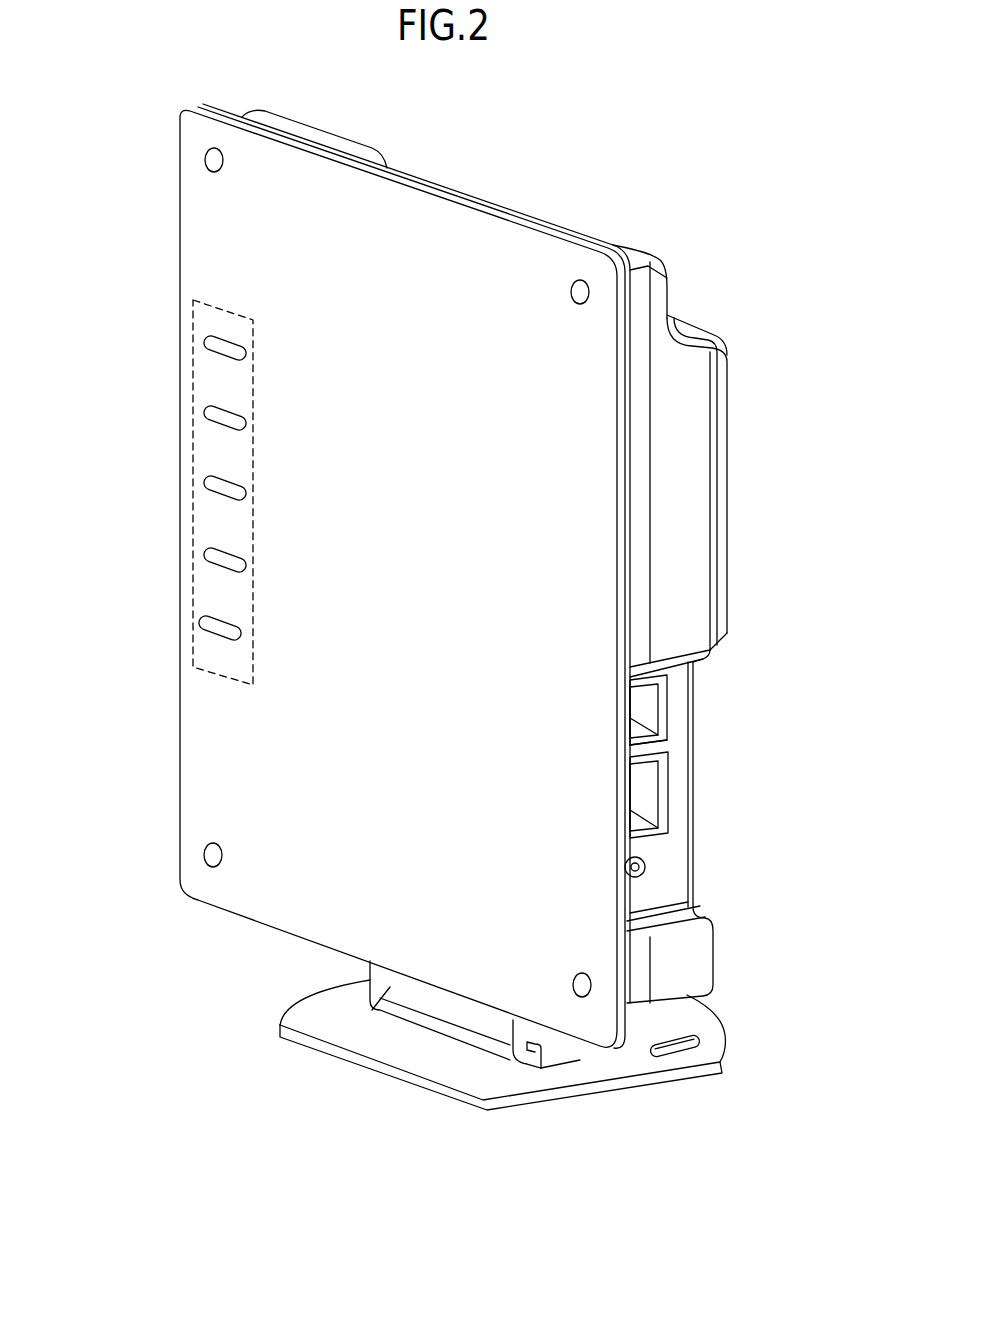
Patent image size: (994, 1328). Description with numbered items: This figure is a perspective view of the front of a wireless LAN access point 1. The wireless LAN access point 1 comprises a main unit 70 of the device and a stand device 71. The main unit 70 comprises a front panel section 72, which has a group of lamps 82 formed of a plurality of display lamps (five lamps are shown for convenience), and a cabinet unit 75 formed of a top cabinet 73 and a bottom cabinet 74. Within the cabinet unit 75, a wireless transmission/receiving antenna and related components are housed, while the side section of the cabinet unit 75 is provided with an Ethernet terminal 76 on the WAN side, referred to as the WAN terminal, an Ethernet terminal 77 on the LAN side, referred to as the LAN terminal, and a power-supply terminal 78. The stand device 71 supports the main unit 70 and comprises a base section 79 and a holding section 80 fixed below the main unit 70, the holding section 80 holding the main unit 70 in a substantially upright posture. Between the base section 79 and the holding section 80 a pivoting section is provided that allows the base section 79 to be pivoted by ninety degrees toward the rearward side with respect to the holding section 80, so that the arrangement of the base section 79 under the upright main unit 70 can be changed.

The wireless LAN access point 1 is at (560, 185).
The main unit 70 is at (214, 241).
The stand device 71 is at (408, 1060).
The front panel section 72 is at (240, 740).
The top cabinet 73 is at (637, 423).
The bottom cabinet 74 is at (680, 477).
The cabinet unit 75 is at (808, 385).
The Ethernet terminal on the WAN side 76 is at (638, 703).
The Ethernet terminal on the LAN side 77 is at (638, 798).
The power-supply terminal 78 is at (643, 865).
The base section 79 is at (475, 1073).
The holding section 80 is at (303, 1038).
The group of lamps 82 is at (253, 453).